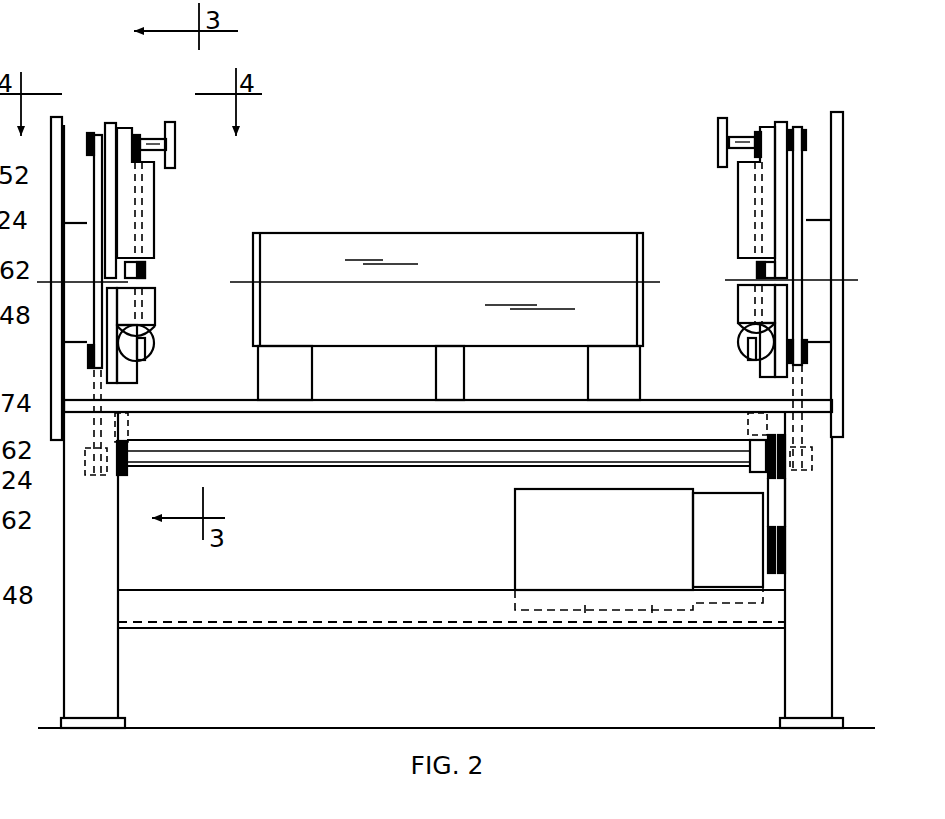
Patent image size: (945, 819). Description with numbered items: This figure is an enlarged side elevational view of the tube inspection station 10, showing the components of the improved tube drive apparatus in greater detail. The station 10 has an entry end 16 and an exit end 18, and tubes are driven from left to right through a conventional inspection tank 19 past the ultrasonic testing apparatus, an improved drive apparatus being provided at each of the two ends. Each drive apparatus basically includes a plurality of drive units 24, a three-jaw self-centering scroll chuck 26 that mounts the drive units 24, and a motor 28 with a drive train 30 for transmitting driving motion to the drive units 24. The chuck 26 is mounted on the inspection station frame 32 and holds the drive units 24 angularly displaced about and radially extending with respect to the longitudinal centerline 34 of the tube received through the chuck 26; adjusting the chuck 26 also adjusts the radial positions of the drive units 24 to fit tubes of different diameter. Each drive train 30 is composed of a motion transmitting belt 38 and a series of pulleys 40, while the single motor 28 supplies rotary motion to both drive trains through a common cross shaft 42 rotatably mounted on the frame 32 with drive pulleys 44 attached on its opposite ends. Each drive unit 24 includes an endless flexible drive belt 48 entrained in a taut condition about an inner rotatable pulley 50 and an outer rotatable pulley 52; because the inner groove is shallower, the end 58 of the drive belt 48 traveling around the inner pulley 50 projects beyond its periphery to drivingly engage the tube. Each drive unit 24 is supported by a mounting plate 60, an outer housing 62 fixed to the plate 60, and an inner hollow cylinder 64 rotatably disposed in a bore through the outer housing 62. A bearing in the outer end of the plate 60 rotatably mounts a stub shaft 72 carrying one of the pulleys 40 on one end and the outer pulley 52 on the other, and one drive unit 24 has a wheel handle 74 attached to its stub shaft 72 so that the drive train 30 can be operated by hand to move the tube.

The tube inspection station 10 is at (857, 92).
The entry end 16 is at (843, 298).
The exit end 18 is at (52, 312).
The inspection tank 19 is at (365, 232).
The drive unit 24 is at (158, 200).
The three-jaw self-centering scroll chuck 26 is at (78, 229).
The motor 28 is at (515, 527).
The drive train 30 is at (466, 210).
The inspection station frame 32 is at (837, 533).
The longitudinal centerline 34 is at (662, 280).
The motion transmitting belt 38 is at (92, 247).
The pulley 40 is at (87, 148).
The cross shaft 42 is at (425, 468).
The drive pulley 44 is at (88, 462).
The drive belt 48 is at (142, 220).
The inner rotatable pulley 50 is at (146, 270).
The outer rotatable pulley 52 is at (138, 135).
The end of the endless drive belt 58 is at (128, 282).
The mounting plate 60 is at (110, 123).
The outer housing 62 is at (156, 185).
The inner hollow cylinder 64 is at (150, 345).
The stub shaft 72 is at (156, 135).
The wheel handle 74 is at (176, 146).